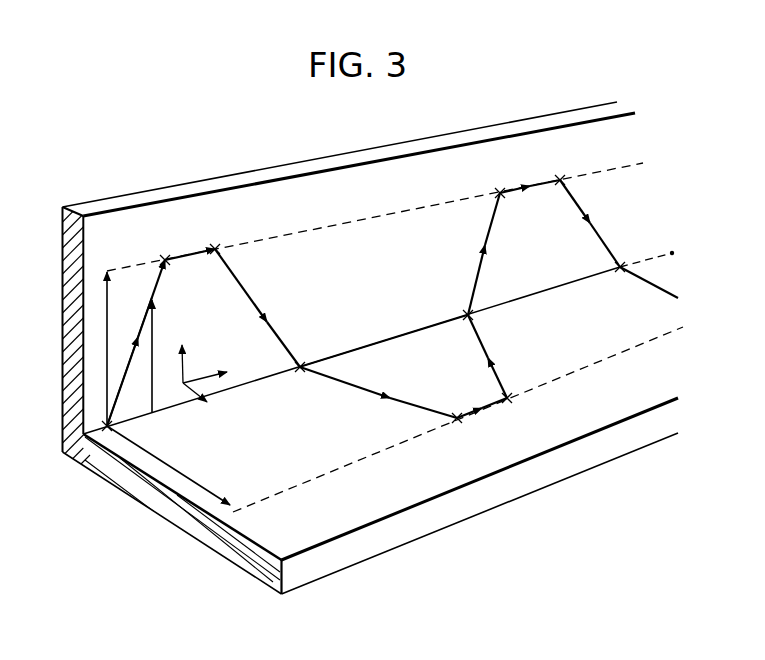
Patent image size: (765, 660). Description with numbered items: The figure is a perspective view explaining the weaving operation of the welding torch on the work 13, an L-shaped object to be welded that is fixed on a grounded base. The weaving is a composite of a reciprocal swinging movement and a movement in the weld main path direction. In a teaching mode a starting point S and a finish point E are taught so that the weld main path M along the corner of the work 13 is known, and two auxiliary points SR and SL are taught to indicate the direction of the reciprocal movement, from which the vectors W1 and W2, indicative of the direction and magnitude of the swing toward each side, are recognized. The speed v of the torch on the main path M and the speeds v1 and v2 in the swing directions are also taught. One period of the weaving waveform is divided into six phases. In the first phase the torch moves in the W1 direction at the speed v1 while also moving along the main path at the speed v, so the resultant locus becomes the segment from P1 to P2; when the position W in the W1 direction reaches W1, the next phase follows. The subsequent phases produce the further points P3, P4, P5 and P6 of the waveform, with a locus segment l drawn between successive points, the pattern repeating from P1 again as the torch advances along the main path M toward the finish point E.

The work 13 is at (177, 522).
The starting point S is at (110, 428).
The auxiliary point SR is at (107, 271).
The auxiliary point SL is at (235, 514).
The position in the W1 direction W is at (153, 330).
The vector W1 is at (108, 300).
The vector W2 is at (168, 462).
The point P1 is at (117, 418).
The point P2 is at (500, 191).
The point P3 is at (215, 247).
The point P4 is at (300, 365).
The point P5 is at (457, 420).
The point P6 is at (507, 400).
The weld main path M is at (382, 343).
The finish point E is at (672, 253).
The locus segment l is at (258, 300).
The speed on the main path v is at (214, 368).
The speed v1 is at (195, 356).
The speed v2 is at (208, 404).